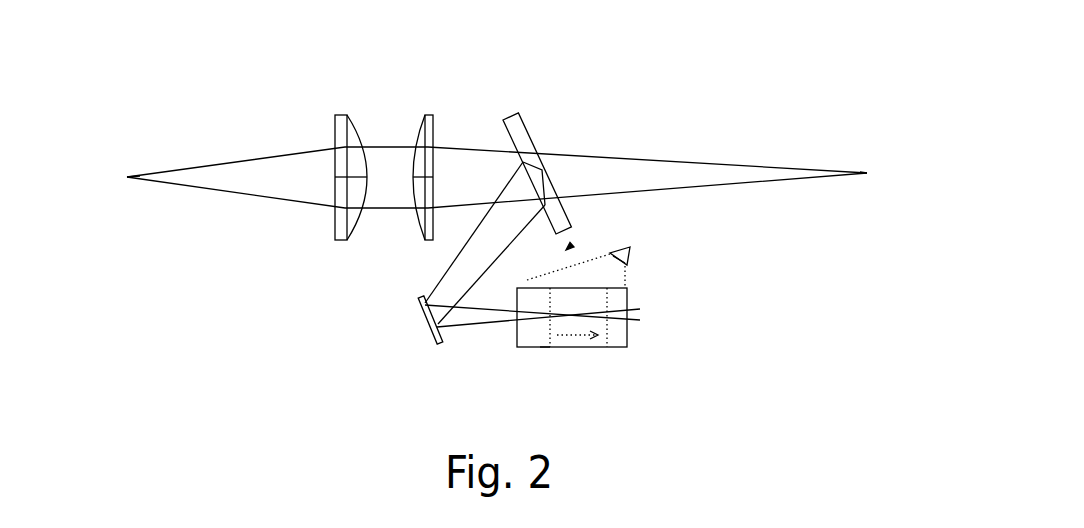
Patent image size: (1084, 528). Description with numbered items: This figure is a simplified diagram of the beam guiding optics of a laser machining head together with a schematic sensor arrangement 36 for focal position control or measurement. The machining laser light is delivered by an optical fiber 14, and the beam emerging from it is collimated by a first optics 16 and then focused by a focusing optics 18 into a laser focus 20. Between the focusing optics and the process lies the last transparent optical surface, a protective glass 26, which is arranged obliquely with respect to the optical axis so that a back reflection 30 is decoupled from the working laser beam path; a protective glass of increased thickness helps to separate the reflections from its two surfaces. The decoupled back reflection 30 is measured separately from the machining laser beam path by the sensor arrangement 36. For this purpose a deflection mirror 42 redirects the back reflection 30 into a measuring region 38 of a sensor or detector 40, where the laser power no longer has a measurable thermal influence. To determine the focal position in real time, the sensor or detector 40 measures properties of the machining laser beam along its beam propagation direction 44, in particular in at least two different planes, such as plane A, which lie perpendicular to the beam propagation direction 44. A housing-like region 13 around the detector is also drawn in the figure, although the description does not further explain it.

The optical fiber 14 is at (127, 177).
The first optics 16 is at (343, 115).
The focusing optics 18 is at (430, 115).
The protective glass 26 is at (515, 113).
The laser focus 20 is at (867, 173).
The back reflection 30 is at (457, 278).
The deflection mirror 42 is at (430, 318).
The measuring region 38 is at (633, 330).
The detector housing 13 is at (607, 347).
The beam propagation direction 44 is at (570, 338).
The plane A is at (547, 338).
The sensor or detector 40 is at (630, 248).
The sensor arrangement 36 is at (566, 250).